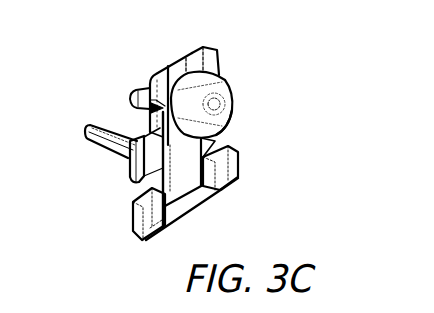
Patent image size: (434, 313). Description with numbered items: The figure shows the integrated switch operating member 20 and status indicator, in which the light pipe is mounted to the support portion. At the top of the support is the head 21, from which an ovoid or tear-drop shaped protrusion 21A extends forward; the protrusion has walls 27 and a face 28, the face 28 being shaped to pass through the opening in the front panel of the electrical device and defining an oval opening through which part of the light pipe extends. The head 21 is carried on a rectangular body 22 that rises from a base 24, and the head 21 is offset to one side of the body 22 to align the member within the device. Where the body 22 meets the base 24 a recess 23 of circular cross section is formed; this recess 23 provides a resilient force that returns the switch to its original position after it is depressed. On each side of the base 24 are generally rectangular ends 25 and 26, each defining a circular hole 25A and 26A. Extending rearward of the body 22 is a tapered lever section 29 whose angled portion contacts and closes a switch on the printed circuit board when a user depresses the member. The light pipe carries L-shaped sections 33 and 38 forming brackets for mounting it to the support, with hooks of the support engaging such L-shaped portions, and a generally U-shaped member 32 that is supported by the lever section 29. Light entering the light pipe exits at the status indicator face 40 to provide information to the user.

The switch operating member 20 is at (272, 75).
The head 21 is at (173, 85).
The protrusion 21A is at (222, 138).
The body 22 is at (196, 174).
The recess 23 is at (228, 190).
The base 24 is at (199, 199).
The end 25 is at (230, 186).
The circular hole 25A is at (226, 174).
The end 26 is at (158, 232).
The circular hole 26A is at (157, 212).
The walls 27 is at (187, 101).
The face 28 is at (227, 129).
The lever section 29 is at (97, 146).
The U-shaped member 32 is at (130, 179).
The L-shaped section 33 is at (137, 92).
The L-shaped section 38 is at (137, 112).
The status indicator face 40 is at (214, 107).